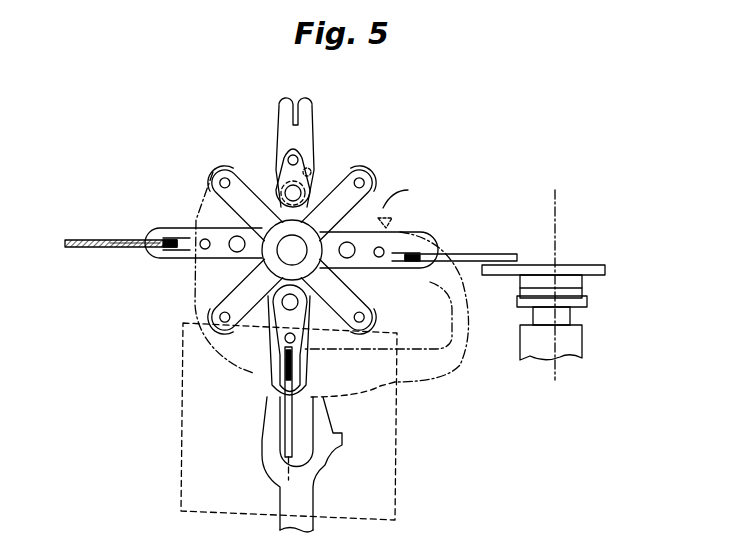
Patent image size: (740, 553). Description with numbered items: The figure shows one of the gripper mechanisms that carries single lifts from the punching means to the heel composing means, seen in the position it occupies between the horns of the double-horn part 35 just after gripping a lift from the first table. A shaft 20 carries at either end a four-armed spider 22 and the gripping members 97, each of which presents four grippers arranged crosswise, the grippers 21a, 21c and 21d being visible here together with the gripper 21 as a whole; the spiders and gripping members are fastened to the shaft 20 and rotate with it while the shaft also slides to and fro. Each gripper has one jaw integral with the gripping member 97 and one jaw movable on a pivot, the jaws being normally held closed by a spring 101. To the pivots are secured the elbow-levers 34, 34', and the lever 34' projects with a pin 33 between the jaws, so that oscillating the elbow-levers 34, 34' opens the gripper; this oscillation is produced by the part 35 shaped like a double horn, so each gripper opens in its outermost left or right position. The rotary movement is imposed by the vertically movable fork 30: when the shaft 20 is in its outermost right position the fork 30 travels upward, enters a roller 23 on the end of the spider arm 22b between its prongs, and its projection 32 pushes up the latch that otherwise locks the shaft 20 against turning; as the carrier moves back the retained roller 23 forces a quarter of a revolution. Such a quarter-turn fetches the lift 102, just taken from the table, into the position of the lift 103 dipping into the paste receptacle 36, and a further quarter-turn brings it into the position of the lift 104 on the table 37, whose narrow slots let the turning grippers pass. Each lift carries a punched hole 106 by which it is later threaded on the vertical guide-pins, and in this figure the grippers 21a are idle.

The shaft 20 is at (302, 241).
The gripper 21 is at (278, 118).
The gripper 21a is at (298, 99).
The gripper 21c is at (276, 374).
The gripper 21d is at (380, 266).
The four-armed spider 22 is at (355, 291).
The spider arm 22b is at (165, 262).
The roller 23 is at (225, 171).
The fork 30 is at (268, 458).
The projection 32 is at (343, 446).
The pin 33 is at (299, 160).
The elbow-lever 34 is at (317, 339).
The elbow-lever 34' is at (402, 228).
The double-horn part 35 is at (198, 208).
The paste receptacle 36 is at (183, 405).
The table 37 is at (605, 270).
The gripping member 97 is at (394, 203).
The spring 101 is at (317, 168).
The lift 102 is at (103, 240).
The lift 103 is at (291, 442).
The lift 104 is at (514, 246).
The hole 106 is at (120, 248).